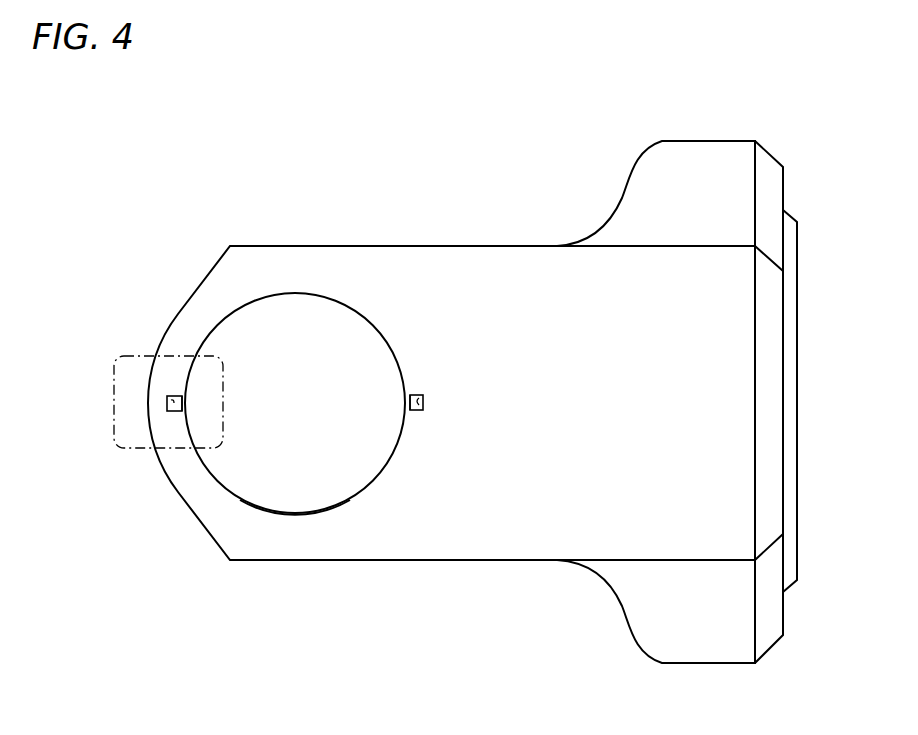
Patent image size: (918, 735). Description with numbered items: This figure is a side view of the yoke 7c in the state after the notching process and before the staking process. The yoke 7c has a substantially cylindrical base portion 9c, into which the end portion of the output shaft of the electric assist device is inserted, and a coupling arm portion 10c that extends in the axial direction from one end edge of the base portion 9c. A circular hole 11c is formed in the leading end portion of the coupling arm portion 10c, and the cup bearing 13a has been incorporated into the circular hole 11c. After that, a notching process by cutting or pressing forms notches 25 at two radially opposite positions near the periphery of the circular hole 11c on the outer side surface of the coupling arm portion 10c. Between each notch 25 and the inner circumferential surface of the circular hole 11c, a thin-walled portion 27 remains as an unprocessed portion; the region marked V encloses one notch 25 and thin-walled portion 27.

The yoke 7c is at (672, 165).
The base portion 9c is at (728, 232).
The coupling arm portion 10c is at (490, 290).
The circular hole 11c is at (383, 337).
The cup bearing 13a is at (302, 488).
The notch 25 is at (172, 398).
The thin-walled portion 27 is at (182, 403).
The enlarged view region V is at (113, 367).